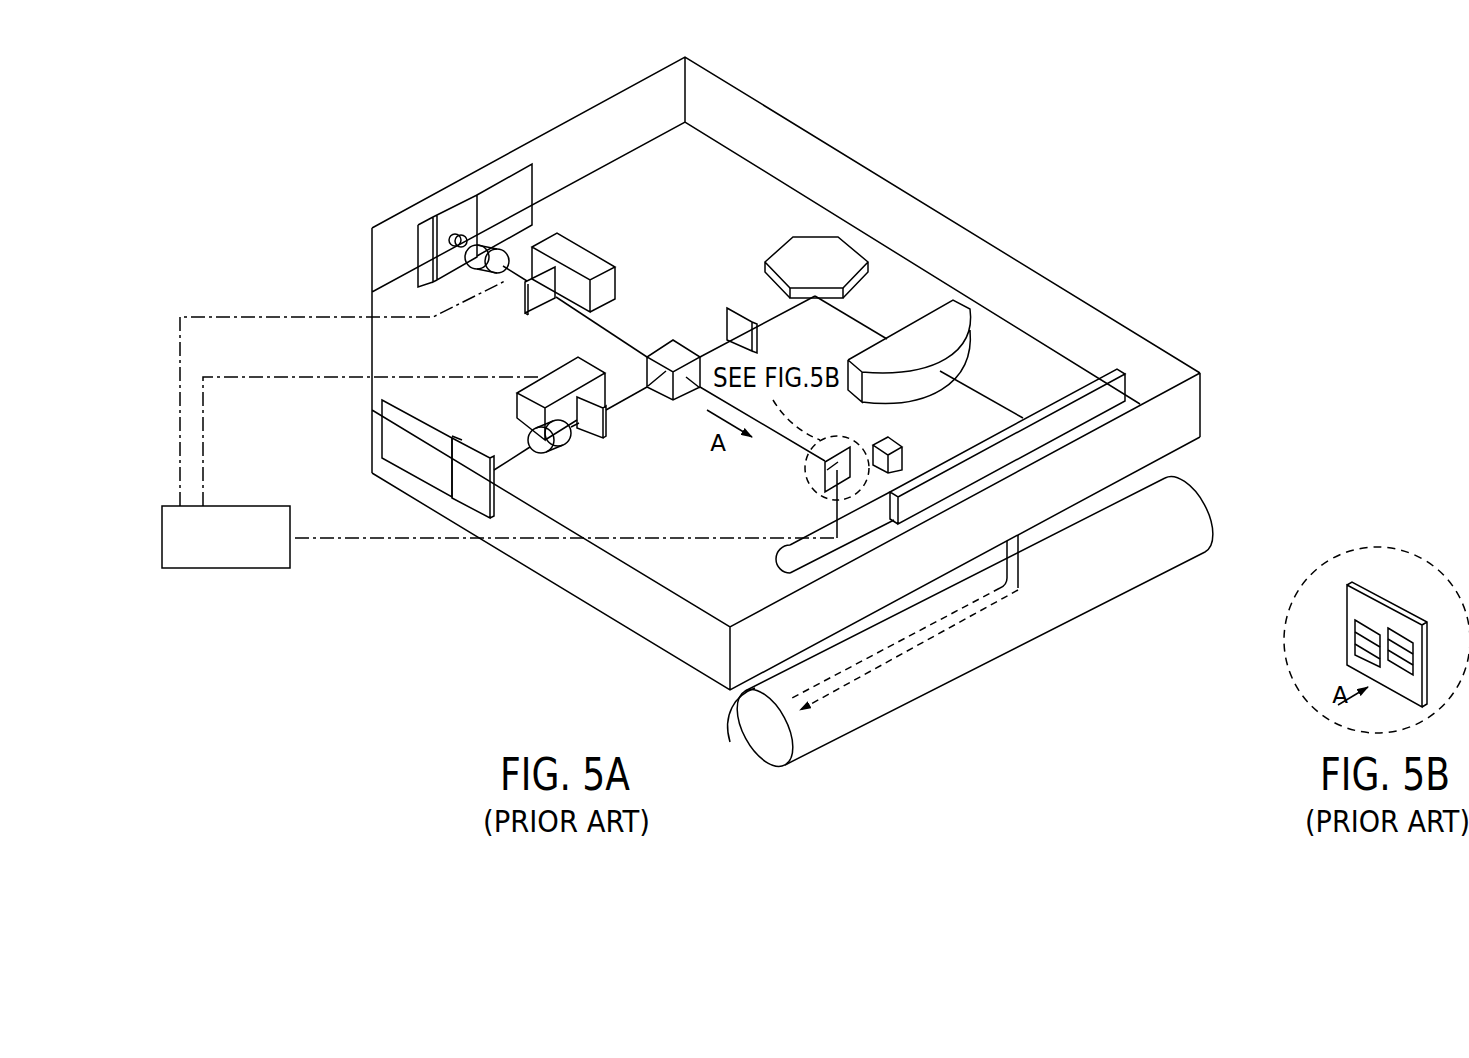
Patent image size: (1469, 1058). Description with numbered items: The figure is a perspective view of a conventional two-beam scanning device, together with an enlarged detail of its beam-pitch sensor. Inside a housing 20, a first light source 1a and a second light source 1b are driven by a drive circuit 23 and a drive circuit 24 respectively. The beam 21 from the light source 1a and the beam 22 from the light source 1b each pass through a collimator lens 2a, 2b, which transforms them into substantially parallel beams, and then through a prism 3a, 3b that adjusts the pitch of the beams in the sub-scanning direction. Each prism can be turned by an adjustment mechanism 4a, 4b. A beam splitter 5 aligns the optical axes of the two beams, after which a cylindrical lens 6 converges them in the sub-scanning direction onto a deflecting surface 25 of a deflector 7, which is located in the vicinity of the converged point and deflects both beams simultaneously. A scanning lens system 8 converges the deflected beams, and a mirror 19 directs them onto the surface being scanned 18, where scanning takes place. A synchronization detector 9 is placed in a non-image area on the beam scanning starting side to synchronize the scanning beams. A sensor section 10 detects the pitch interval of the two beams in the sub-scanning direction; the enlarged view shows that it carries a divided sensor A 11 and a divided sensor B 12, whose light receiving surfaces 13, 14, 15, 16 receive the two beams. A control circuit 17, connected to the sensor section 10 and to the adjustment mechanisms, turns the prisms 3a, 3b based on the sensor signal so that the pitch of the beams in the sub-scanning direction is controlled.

In FIG. 5A, the first light source 1a is at (463, 450).
In FIG. 5A, the second light source 1b is at (460, 218).
In FIG. 5A, the collimator lens 2a is at (557, 447).
In FIG. 5A, the collimator lens 2b is at (485, 240).
In FIG. 5A, the prism 3a is at (590, 432).
In FIG. 5A, the prism 3b is at (527, 307).
In FIG. 5A, the adjustment mechanism 4a is at (572, 370).
In FIG. 5A, the adjustment mechanism 4b is at (580, 253).
In FIG. 5A, the beam splitter 5 is at (678, 348).
In FIG. 5A, the cylindrical lens 6 is at (757, 337).
In FIG. 5A, the deflector 7 is at (790, 252).
In FIG. 5A, the scanning lens system 8 is at (927, 330).
In FIG. 5A, the synchronization detector 9 is at (900, 455).
In FIG. 5A, the sensor section 10 is at (822, 486).
In FIG. 5B, the divided sensor A 11 is at (1378, 618).
In FIG. 5B, the divided sensor B 12 is at (1400, 634).
In FIG. 5B, the light receiving surface 13 is at (1360, 632).
In FIG. 5B, the light receiving surface 14 is at (1360, 651).
In FIG. 5B, the light receiving surface 15 is at (1408, 646).
In FIG. 5B, the light receiving surface 16 is at (1398, 660).
In FIG. 5A, the control circuit 17 is at (215, 555).
In FIG. 5A, the surface being scanned 18 is at (1138, 543).
In FIG. 5A, the mirror 19 is at (1070, 412).
In FIG. 5A, the housing 20 is at (812, 148).
In FIG. 5A, the beam 21 is at (633, 397).
In FIG. 5A, the beam 22 is at (628, 340).
In FIG. 5A, the drive circuit 23 is at (418, 423).
In FIG. 5A, the drive circuit 24 is at (515, 183).
In FIG. 5A, the deflecting surface 25 is at (807, 290).